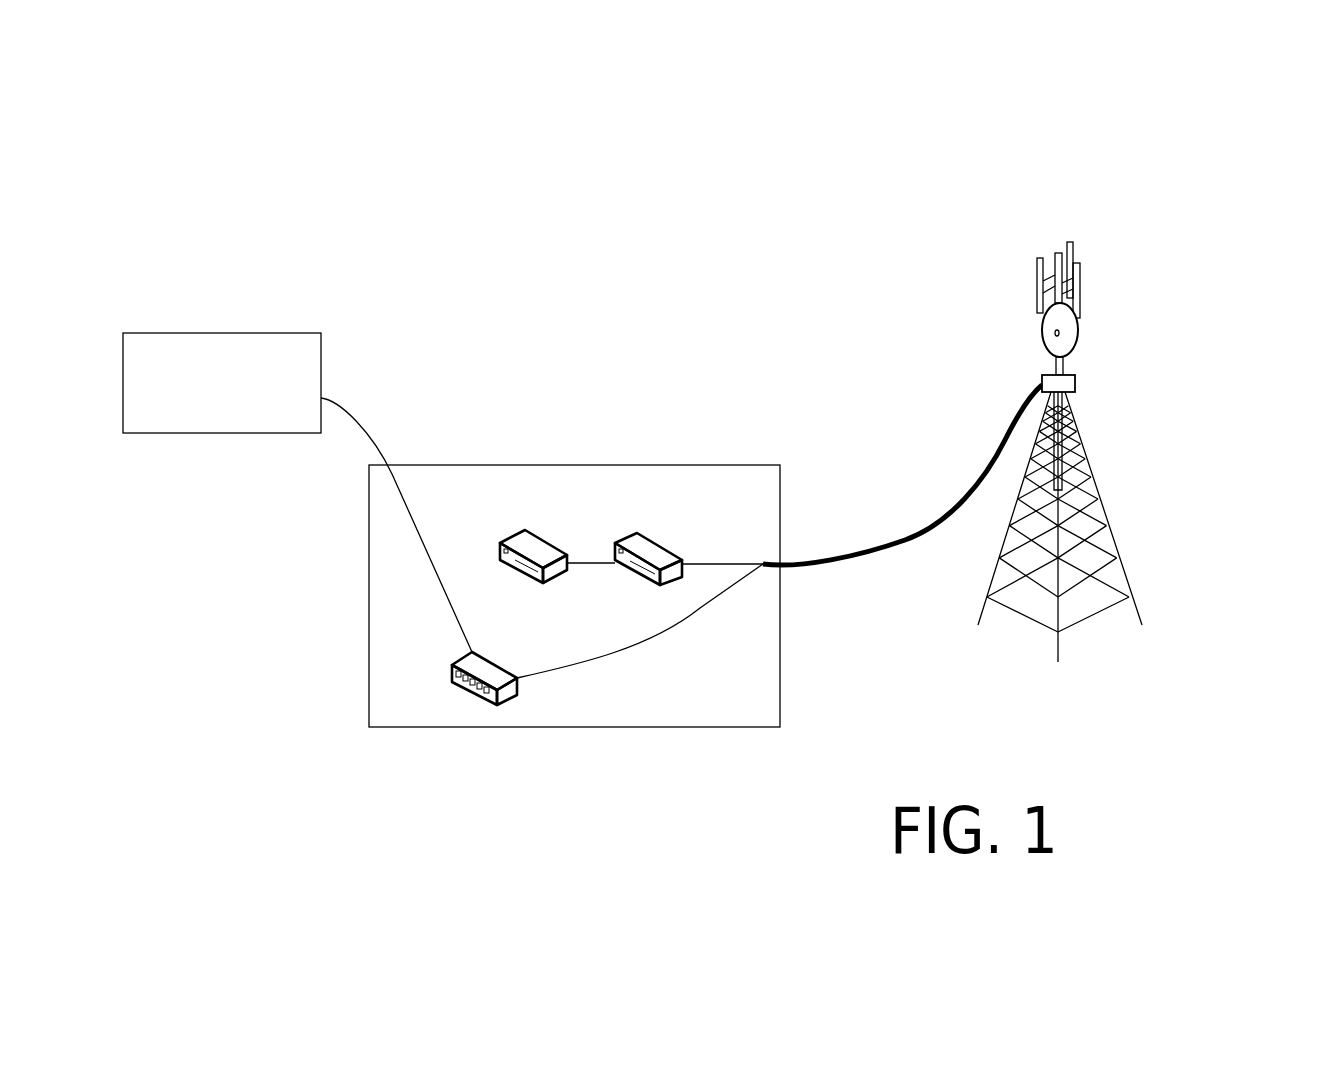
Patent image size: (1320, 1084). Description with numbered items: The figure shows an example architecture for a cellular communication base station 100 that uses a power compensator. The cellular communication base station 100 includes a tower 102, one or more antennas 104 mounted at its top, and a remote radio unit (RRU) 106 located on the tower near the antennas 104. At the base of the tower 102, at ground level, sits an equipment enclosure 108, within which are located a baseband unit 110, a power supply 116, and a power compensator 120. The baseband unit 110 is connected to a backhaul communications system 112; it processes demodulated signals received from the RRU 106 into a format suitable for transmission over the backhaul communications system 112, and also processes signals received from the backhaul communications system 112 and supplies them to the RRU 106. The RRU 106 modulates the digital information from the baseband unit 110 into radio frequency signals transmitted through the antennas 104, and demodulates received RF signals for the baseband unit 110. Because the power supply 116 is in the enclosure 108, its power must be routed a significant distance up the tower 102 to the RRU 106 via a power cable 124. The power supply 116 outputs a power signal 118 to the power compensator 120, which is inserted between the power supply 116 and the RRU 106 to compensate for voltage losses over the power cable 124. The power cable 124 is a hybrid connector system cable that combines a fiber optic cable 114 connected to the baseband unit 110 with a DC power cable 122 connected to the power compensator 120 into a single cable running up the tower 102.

The cellular communication base station 100 is at (1205, 178).
The tower 102 is at (1106, 528).
The antennas 104 is at (1080, 290).
The remote radio unit (RRU) 106 is at (1042, 382).
The equipment enclosure 108 is at (369, 662).
The baseband unit 110 is at (507, 700).
The backhaul communications system 112 is at (287, 333).
The fiber optic cable 114 is at (550, 665).
The power supply 116 is at (535, 533).
The power signal 118 is at (577, 563).
The power compensator 120 is at (662, 547).
The DC power cable 122 is at (708, 564).
The power cable 124 is at (950, 517).